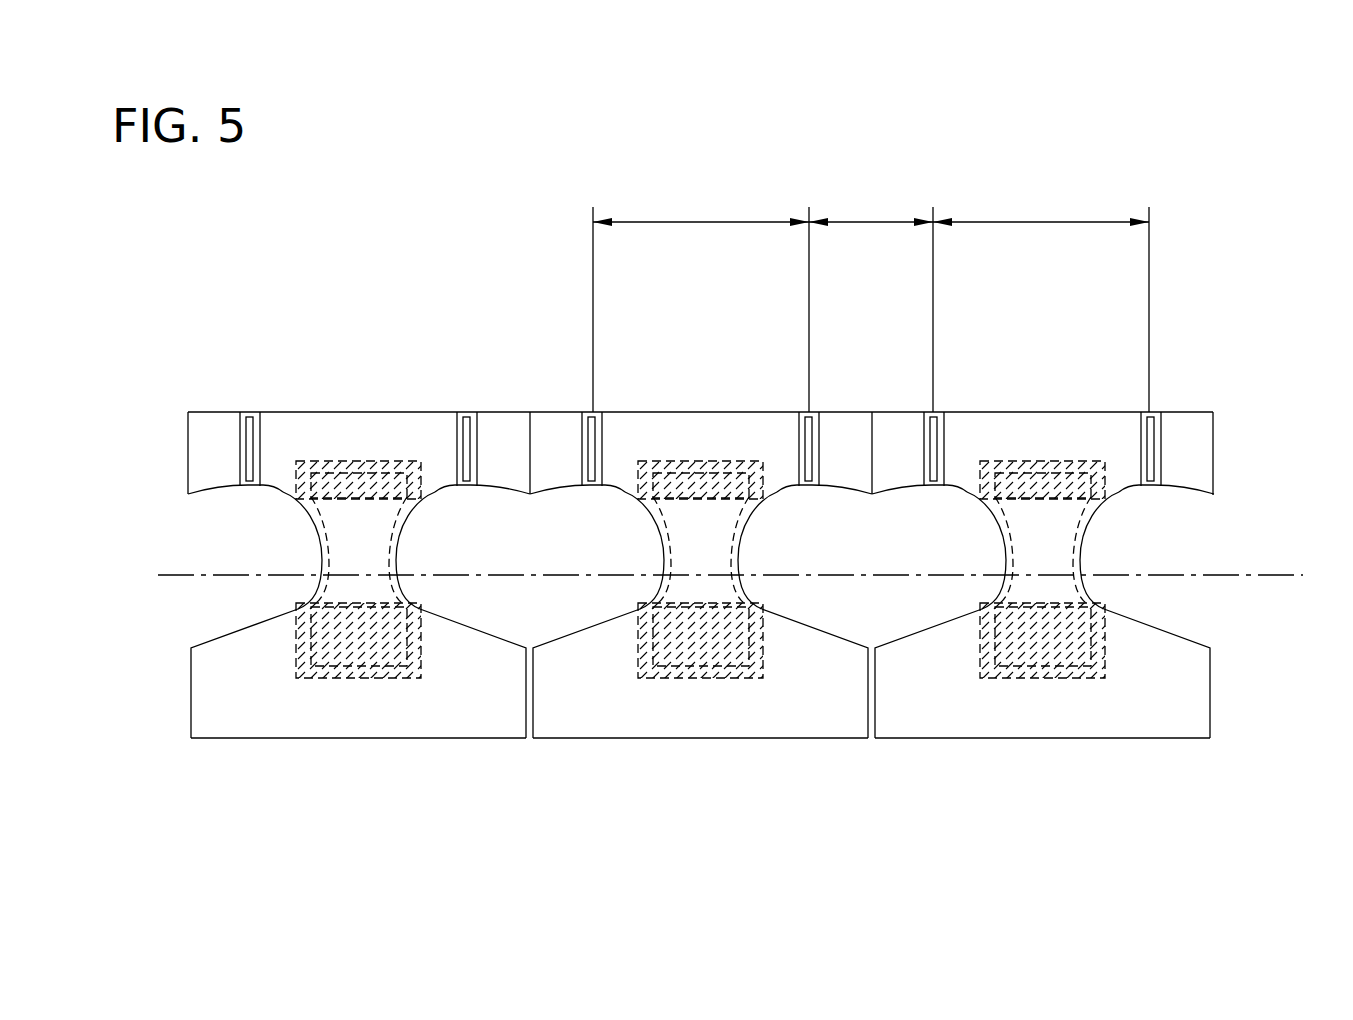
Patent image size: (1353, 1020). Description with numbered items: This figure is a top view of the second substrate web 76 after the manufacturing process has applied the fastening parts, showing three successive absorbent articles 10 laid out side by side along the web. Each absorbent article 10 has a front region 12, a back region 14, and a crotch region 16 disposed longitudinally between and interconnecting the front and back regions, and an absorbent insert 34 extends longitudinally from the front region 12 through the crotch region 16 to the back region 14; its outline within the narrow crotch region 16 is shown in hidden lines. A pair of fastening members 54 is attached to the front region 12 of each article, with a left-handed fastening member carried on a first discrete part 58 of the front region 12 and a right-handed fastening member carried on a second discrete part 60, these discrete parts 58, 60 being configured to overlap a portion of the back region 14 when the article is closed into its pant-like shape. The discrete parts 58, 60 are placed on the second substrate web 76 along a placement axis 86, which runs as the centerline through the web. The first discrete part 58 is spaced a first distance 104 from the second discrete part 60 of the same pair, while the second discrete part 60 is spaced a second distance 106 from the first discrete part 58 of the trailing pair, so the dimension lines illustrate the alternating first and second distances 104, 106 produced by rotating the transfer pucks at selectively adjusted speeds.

The absorbent article 10 is at (700, 533).
The front region 12 is at (410, 431).
The back region 14 is at (398, 723).
The crotch region 16 is at (357, 527).
The absorbent insert 34 is at (311, 525).
The fastening members 54 is at (246, 450).
The first discrete part 58 is at (478, 425).
The second discrete part 60 is at (241, 420).
The second substrate web 76 is at (1032, 738).
The placement axis 86 is at (1232, 572).
The first distance 104 is at (693, 225).
The second distance 106 is at (851, 225).